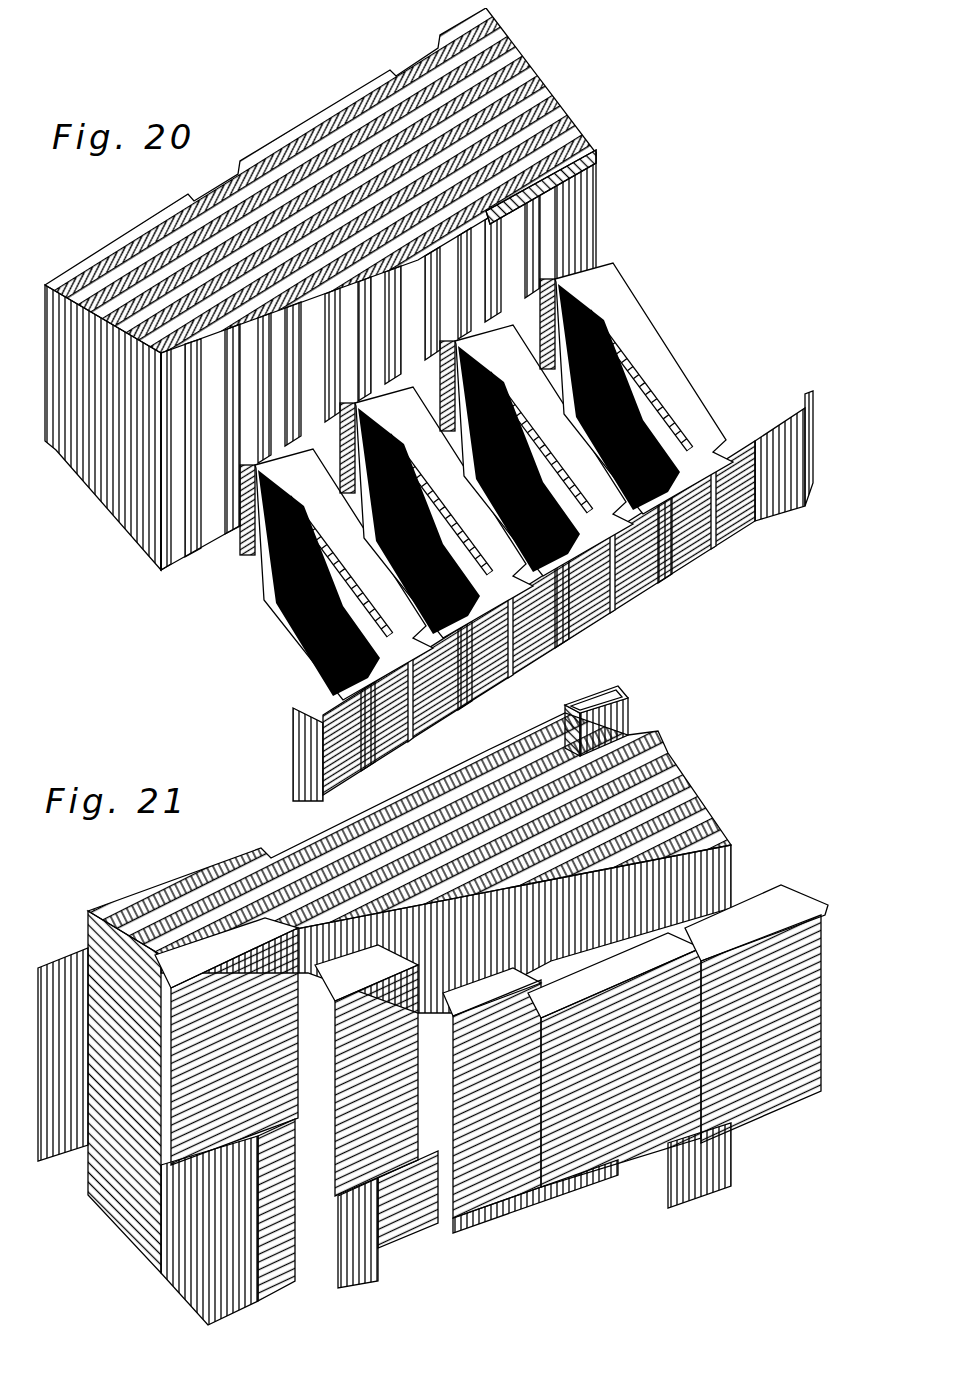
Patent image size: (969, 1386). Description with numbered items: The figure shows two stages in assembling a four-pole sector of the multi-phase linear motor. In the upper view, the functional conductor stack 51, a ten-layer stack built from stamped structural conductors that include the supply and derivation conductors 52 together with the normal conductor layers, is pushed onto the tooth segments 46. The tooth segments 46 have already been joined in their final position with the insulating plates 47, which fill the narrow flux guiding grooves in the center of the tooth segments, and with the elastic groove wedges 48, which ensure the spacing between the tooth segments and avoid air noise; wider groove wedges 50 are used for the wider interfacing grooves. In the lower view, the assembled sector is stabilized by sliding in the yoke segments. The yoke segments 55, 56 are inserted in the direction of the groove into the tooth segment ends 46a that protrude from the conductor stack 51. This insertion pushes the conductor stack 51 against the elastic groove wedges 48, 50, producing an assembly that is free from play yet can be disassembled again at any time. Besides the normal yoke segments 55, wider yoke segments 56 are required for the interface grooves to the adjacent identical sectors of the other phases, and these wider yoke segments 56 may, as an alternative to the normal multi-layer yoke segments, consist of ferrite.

In FIG. 20, the tooth segments 46 is at (727, 500).
In FIG. 21, the tooth segment ends 46a is at (423, 1183).
In FIG. 20, the insulating plates 47 is at (706, 528).
In FIG. 20, the elastic groove wedges 48 is at (655, 565).
In FIG. 20, the wider groove wedges 50 is at (775, 420).
In FIG. 20, the conductor stack 51 is at (600, 148).
In FIG. 21, the conductor stack 51 is at (737, 829).
In FIG. 21, the supply and derivation conductors 52 is at (600, 712).
In FIG. 21, the yoke segments 55 is at (612, 1092).
In FIG. 21, the wider yoke segments 56 is at (757, 1057).